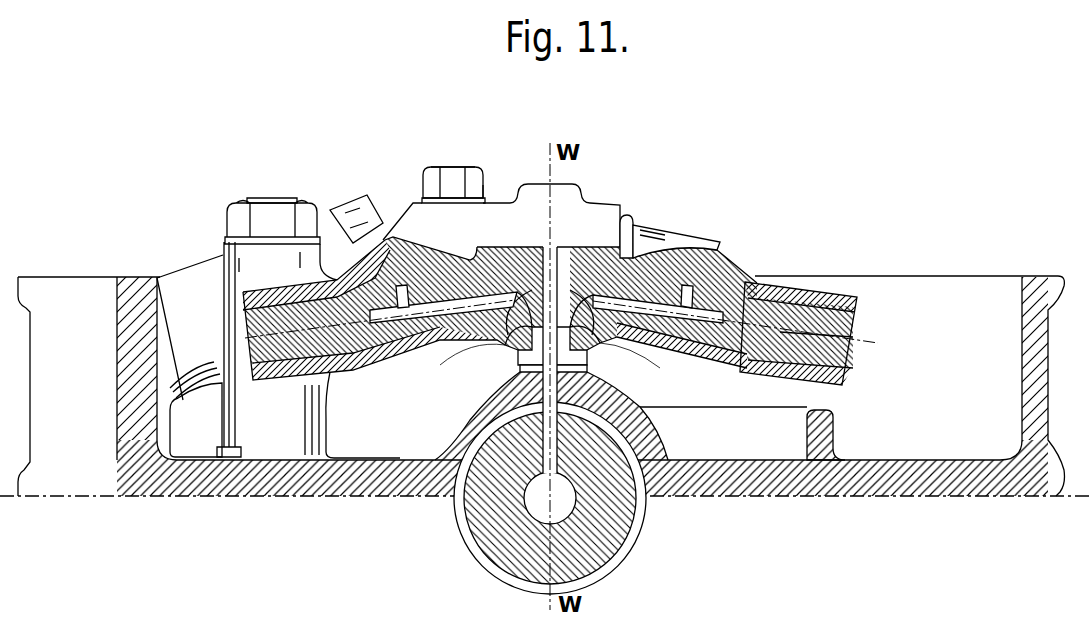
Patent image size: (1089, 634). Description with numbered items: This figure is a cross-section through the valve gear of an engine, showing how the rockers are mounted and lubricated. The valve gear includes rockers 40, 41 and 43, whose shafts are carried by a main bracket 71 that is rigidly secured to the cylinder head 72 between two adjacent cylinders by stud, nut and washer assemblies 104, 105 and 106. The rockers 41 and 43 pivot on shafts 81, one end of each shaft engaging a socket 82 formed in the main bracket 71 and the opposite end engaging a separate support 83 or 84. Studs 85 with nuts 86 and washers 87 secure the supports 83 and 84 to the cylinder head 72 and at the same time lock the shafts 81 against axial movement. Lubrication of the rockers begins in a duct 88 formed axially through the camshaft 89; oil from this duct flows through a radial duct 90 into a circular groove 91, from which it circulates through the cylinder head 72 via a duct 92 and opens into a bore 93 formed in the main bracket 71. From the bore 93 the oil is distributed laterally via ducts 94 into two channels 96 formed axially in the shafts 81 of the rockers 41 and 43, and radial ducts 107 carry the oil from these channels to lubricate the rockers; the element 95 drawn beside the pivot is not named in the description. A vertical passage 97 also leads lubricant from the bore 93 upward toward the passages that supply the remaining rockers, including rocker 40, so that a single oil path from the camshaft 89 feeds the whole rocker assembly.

The rocker 40 is at (198, 290).
The rocker 41 is at (697, 257).
The rocker 43 is at (430, 233).
The main bracket 71 is at (420, 217).
The cylinder head 72 is at (260, 483).
The shaft 81 is at (250, 330).
The socket 82 is at (625, 258).
The support 83 is at (240, 397).
The support 84 is at (813, 290).
The stud 85 is at (260, 197).
The nut 86 is at (237, 207).
The washer 87 is at (238, 240).
The duct 88 is at (533, 507).
The camshaft 89 is at (475, 513).
The radial duct 90 is at (543, 447).
The circular groove 91 is at (470, 540).
The duct 92 is at (543, 393).
The bore 93 is at (600, 400).
The duct 94 is at (590, 332).
The socket 95 is at (518, 315).
The channel 96 is at (366, 194).
The vertical passage 97 is at (632, 240).
The stud 104 is at (453, 167).
The nut 105 is at (463, 175).
The washer 106 is at (480, 192).
The radial duct 107 is at (392, 290).